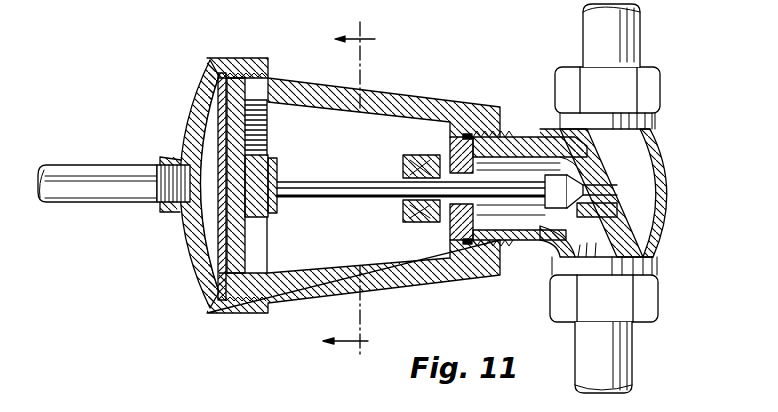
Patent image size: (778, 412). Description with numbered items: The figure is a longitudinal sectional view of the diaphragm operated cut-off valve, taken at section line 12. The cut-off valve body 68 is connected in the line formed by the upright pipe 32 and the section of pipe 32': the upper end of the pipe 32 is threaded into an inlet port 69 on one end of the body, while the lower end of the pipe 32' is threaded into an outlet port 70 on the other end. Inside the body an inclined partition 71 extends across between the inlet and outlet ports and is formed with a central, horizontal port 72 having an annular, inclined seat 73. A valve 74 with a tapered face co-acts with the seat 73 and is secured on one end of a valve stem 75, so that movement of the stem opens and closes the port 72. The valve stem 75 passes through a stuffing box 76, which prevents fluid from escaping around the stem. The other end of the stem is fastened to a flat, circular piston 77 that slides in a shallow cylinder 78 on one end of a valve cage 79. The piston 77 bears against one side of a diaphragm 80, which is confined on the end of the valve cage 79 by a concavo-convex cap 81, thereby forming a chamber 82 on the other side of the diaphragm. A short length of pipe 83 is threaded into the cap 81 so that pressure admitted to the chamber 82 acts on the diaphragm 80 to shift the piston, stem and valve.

The section line 12 is at (349, 195).
The upright pipe 32 is at (629, 357).
The section of pipe 32' is at (636, 35).
The cut-off valve body 68 is at (672, 163).
The inlet port 69 is at (587, 302).
The outlet port 70 is at (640, 87).
The inclined partition 71 is at (639, 196).
The port 72 is at (613, 188).
The annular inclined seat 73 is at (585, 217).
The valve 74 is at (553, 200).
The valve stem 75 is at (343, 185).
The stuffing box 76 is at (405, 168).
The piston 77 is at (245, 242).
The shallow cylinder 78 is at (255, 253).
The valve cage 79 is at (400, 277).
The diaphragm 80 is at (222, 267).
The concavo-convex cap 81 is at (200, 122).
The chamber 82 is at (205, 222).
The pipe 83 is at (97, 173).